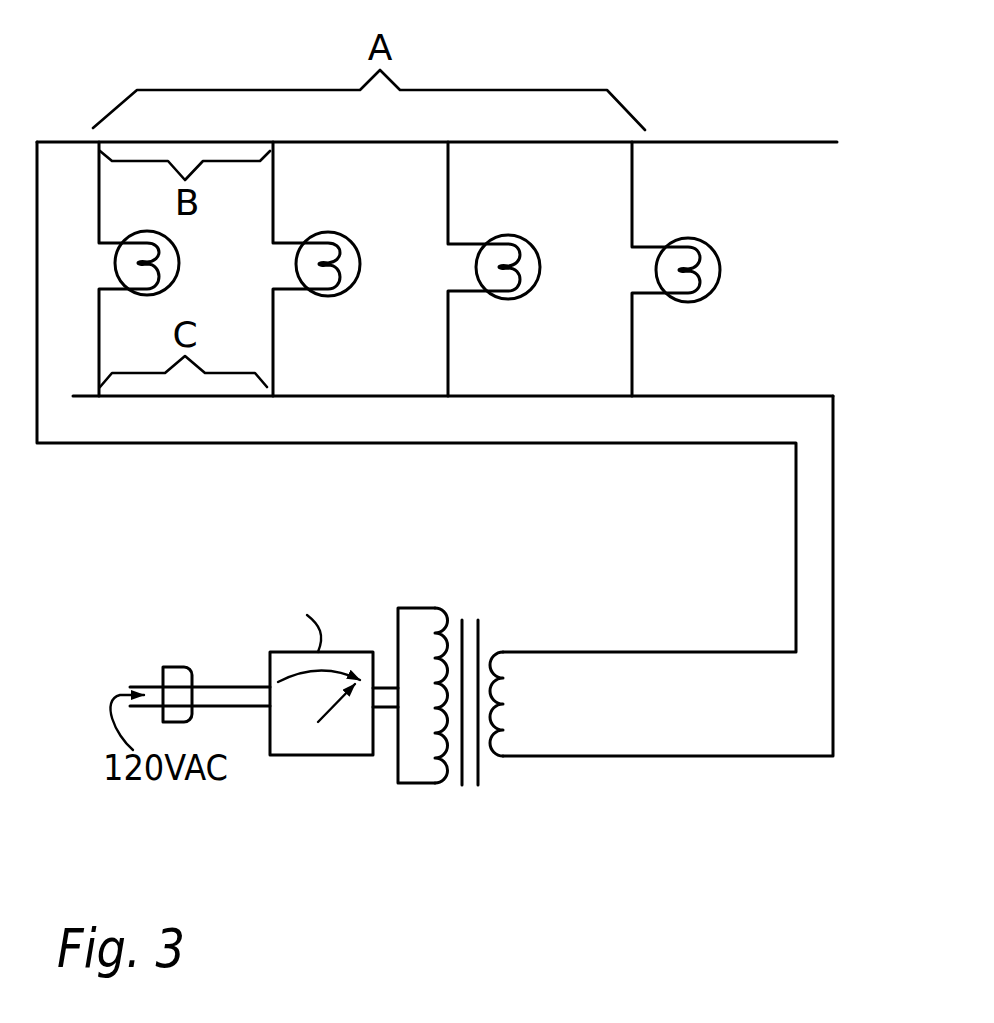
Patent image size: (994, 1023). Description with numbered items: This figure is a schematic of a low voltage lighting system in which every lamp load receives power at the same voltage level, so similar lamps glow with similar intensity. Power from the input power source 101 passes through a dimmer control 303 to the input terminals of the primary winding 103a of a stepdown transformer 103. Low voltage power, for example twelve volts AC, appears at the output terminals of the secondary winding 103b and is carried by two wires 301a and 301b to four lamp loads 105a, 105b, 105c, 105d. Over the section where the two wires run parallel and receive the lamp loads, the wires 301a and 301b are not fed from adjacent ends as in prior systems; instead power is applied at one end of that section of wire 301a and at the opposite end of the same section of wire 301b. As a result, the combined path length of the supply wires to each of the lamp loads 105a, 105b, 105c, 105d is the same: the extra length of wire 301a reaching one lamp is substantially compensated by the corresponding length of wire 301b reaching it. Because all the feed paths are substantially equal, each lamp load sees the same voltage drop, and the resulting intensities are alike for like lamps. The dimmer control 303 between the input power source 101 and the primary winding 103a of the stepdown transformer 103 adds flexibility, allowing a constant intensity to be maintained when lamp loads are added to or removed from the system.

The input power source 101 is at (153, 679).
The stepdown transformer 103 is at (479, 734).
The primary winding 103a is at (415, 791).
The secondary winding 103b is at (503, 757).
The lamp load 105a is at (143, 300).
The lamp load 105b is at (327, 300).
The lamp load 105c is at (511, 303).
The lamp load 105d is at (722, 289).
The wire 301a is at (673, 142).
The wire 301b is at (473, 399).
The dimmer control 303 is at (328, 760).